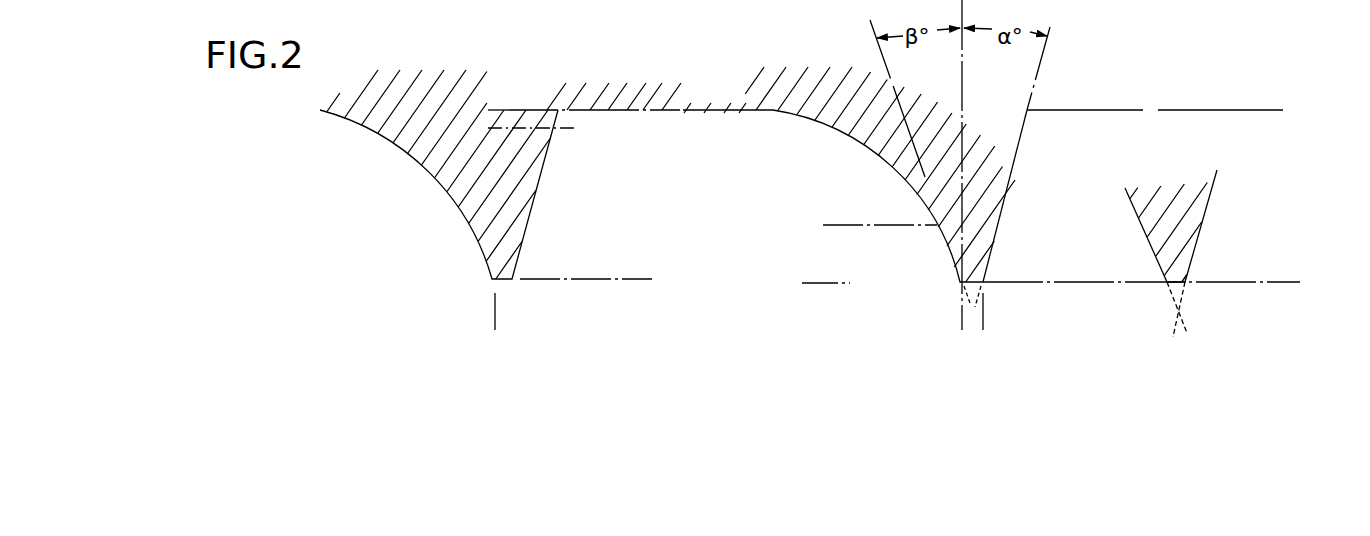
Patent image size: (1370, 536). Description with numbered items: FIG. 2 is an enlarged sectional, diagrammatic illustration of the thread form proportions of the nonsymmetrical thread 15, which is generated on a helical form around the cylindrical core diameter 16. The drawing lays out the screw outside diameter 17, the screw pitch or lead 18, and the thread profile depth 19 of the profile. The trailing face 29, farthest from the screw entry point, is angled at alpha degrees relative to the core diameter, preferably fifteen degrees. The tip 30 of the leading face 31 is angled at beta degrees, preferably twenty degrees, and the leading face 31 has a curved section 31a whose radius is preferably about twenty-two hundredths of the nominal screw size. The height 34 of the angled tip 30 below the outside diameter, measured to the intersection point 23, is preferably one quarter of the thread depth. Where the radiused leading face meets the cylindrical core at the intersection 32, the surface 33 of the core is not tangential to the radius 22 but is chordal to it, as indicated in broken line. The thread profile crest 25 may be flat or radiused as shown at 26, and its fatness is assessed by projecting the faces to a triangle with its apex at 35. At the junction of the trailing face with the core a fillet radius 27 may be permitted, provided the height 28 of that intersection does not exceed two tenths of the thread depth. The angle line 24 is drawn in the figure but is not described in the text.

The nonsymmetrical thread 15 is at (441, 189).
The cylindrical core diameter 16 is at (701, 11).
The screw outside diameter 17 is at (1273, 282).
The screw pitch or lead 18 is at (959, 312).
The thread profile depth 19 is at (638, 111).
The radius 22 is at (738, 322).
The intersection point 23 is at (937, 228).
The flank angle reference line 24 is at (911, 117).
The thread profile crest 25 is at (985, 312).
The radiused crest 26 is at (1184, 285).
The fillet radius 27 is at (508, 129).
The height of the intersection 28 is at (508, 109).
The trailing face 29 is at (1014, 165).
The tip of the leading face 30 is at (948, 265).
The leading face 31 is at (902, 185).
The curved section of the leading face 31a is at (893, 158).
The intersection of radiused thread profile and cylindrical core 32 is at (781, 115).
The surface of the core 33 is at (747, 115).
The height of the angled thread tip 34 is at (823, 226).
The apex 35 is at (975, 298).